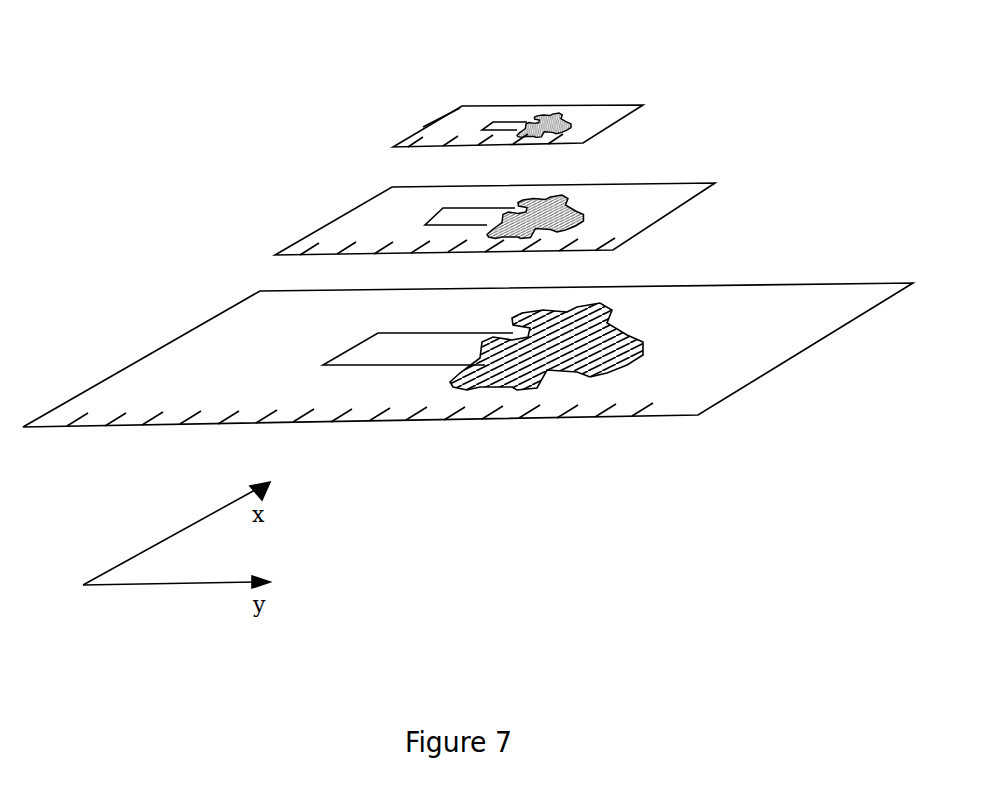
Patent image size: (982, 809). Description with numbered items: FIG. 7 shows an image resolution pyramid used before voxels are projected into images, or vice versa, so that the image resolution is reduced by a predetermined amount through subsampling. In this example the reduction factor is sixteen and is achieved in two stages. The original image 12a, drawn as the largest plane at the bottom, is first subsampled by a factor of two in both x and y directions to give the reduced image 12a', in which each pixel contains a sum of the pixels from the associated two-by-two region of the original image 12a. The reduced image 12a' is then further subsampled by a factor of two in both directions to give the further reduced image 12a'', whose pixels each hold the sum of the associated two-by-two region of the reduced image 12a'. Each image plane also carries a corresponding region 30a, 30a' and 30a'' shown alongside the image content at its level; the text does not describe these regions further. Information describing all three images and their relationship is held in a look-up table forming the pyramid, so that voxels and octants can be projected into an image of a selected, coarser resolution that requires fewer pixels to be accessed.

The elongated electrode / conductive trace on substrate 30a is at (341, 283).
The original image 12a is at (677, 290).
The electrode on second layer 30a' is at (397, 155).
The reduced image 12a' is at (653, 167).
The electrode on third layer 30a'' is at (452, 72).
The further reduced image 12a'' is at (635, 77).